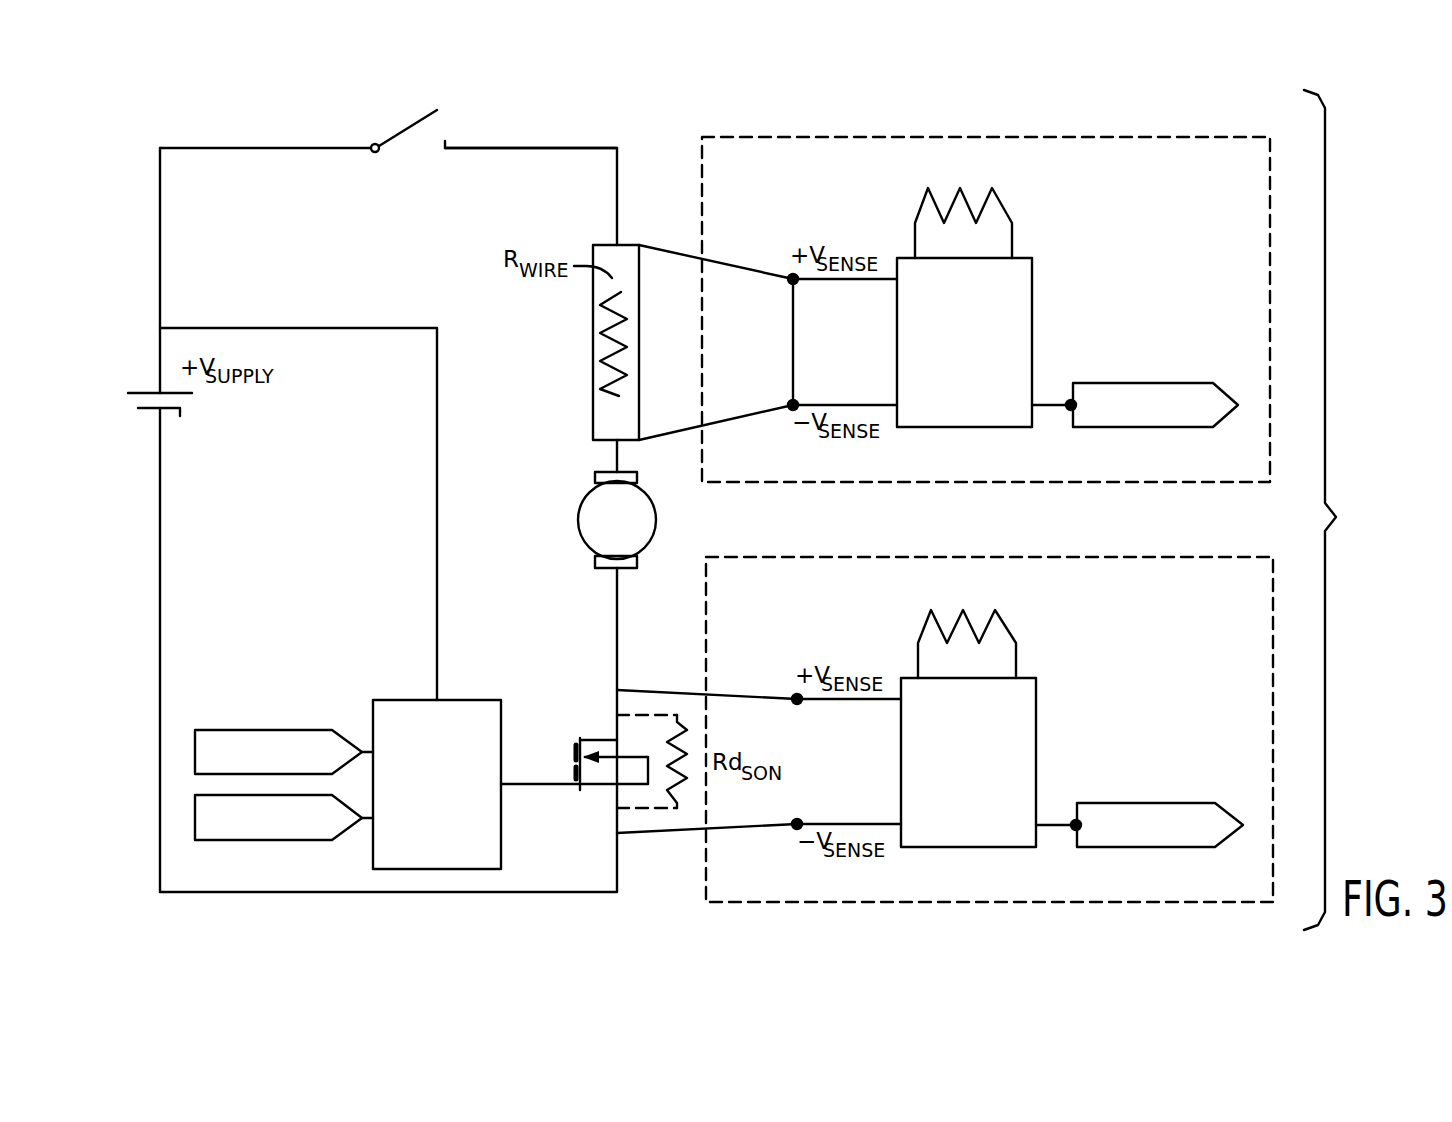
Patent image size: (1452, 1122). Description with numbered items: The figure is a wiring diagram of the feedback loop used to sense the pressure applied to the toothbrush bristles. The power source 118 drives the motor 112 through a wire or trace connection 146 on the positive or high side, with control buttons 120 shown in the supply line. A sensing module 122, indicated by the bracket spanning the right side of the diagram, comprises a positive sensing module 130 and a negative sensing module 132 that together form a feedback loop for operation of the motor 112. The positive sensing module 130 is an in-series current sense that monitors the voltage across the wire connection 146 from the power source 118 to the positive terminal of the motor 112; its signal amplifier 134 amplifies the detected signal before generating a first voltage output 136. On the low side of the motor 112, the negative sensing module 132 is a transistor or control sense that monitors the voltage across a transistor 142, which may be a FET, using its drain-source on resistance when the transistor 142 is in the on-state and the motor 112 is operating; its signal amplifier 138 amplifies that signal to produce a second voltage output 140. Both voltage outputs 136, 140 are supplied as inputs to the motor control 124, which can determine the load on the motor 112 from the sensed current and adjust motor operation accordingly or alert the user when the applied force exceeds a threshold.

The motor 112 is at (583, 503).
The power source 118 is at (146, 418).
The control buttons 120 is at (408, 126).
The sensing module 122 is at (1342, 510).
The motor control 124 is at (466, 700).
The positive sensing module 130 is at (826, 137).
The negative sensing module 132 is at (1047, 902).
The signal amplifier 134 is at (1032, 300).
The first voltage output 136 is at (1142, 383).
The signal amplifier 138 is at (1036, 719).
The second voltage output 140 is at (263, 840).
The transistor 142 is at (603, 788).
The wire or trace connection 146 is at (531, 147).